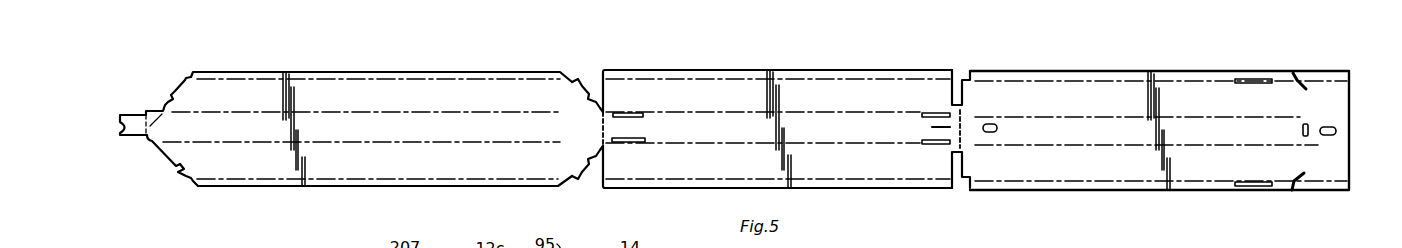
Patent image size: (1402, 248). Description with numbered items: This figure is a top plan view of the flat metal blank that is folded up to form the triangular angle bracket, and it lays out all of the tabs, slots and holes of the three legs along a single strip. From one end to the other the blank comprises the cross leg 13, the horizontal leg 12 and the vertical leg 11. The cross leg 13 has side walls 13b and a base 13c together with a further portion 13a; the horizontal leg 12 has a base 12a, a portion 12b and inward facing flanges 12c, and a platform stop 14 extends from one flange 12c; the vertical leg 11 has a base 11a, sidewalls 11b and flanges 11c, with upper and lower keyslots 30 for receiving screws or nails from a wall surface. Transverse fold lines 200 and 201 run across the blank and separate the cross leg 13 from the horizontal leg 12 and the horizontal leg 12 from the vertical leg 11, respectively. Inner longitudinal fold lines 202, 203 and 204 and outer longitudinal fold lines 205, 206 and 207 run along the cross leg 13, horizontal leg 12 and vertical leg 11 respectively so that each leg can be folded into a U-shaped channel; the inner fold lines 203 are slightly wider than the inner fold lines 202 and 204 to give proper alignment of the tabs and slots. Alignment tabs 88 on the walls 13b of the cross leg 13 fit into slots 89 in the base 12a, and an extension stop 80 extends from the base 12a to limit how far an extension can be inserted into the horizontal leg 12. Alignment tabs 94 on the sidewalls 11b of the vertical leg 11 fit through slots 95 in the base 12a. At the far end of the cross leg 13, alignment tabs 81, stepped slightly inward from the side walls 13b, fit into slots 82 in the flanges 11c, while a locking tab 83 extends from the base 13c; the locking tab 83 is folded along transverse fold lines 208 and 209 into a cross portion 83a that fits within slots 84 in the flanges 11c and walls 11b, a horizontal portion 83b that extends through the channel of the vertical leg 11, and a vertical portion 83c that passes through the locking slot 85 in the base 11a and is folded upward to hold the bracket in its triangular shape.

The vertical leg 11 is at (1147, 66).
The base of vertical leg 11a is at (1117, 130).
The sidewalls of vertical leg 11b is at (1182, 93).
The flanges of vertical leg 11c is at (1193, 78).
The horizontal leg 12 is at (800, 68).
The base of horizontal leg 12a is at (727, 130).
The tubular section portion 12b is at (828, 90).
The flanges of horizontal leg 12c is at (755, 70).
The cross leg 13 is at (383, 68).
The tubular section portion 13a is at (367, 130).
The side walls of cross leg 13b is at (402, 92).
The base of cross leg 13c is at (322, 70).
The platform stop 14 is at (960, 70).
The keyslots 30 is at (1338, 131).
The extension stop 80 is at (938, 127).
The alignment tabs 81 is at (192, 76).
The slots 82 is at (1250, 78).
The locking tab 83 is at (137, 148).
The cross portion of locking tab 83a is at (167, 100).
The horizontal portion of locking tab 83b is at (132, 113).
The vertical portion of locking tab 83c is at (118, 112).
The slots 84 is at (1298, 73).
The locking slot 85 is at (1306, 122).
The alignment tabs 88 is at (587, 78).
The slots 89 is at (633, 138).
The alignment tabs 94 is at (965, 92).
The slots 95 is at (927, 144).
The transverse fold line 200 is at (600, 125).
The transverse fold line 201 is at (965, 127).
The inner longitudinal fold lines 202 is at (513, 141).
The inner longitudinal fold lines 203 is at (867, 145).
The inner longitudinal fold lines 204 is at (1098, 139).
The outer longitudinal fold lines 205 is at (482, 78).
The outer longitudinal fold lines 206 is at (686, 79).
The outer longitudinal fold lines 207 is at (1102, 81).
The transverse fold line 208 is at (150, 140).
The transverse fold line 209 is at (127, 137).